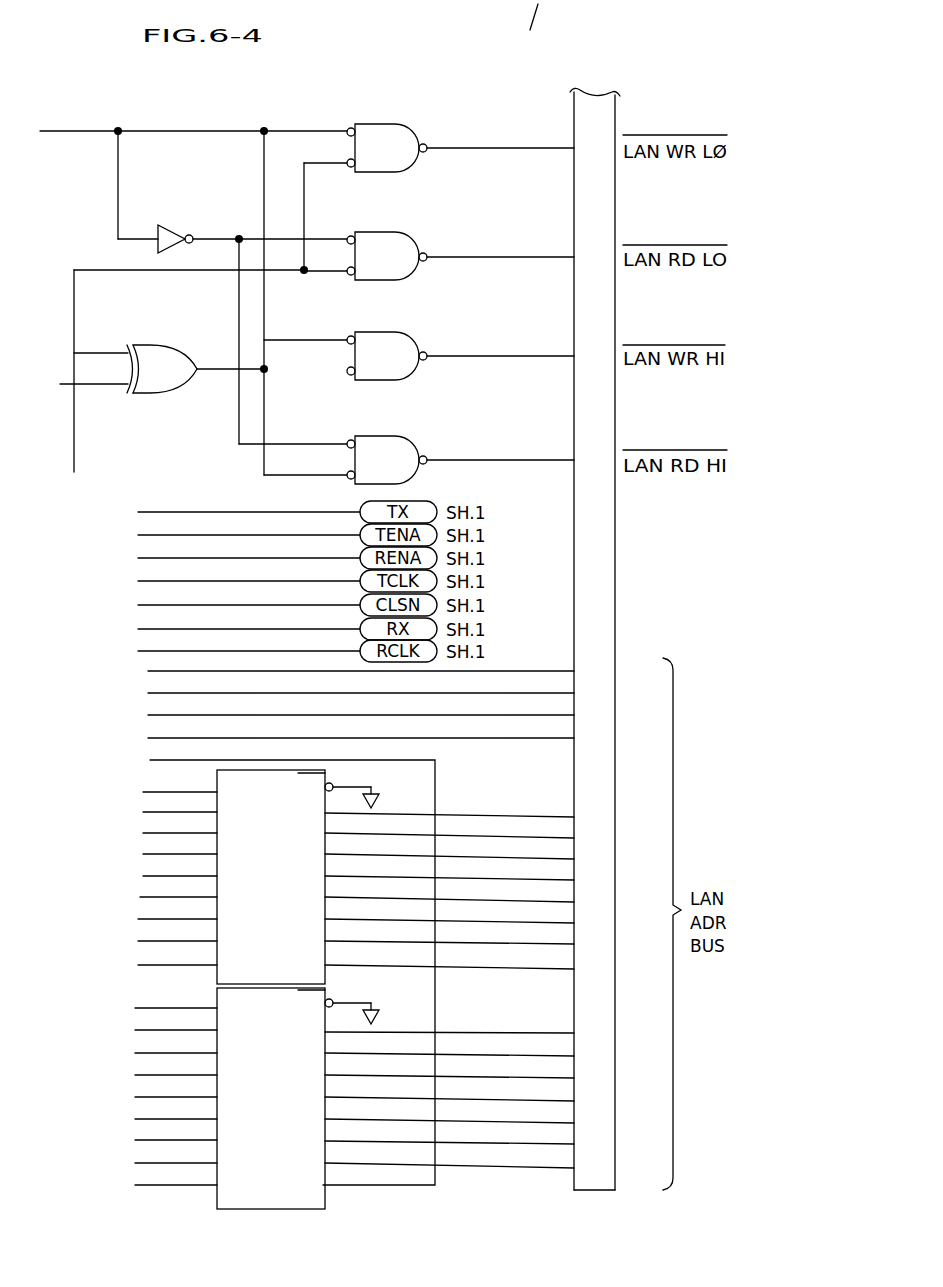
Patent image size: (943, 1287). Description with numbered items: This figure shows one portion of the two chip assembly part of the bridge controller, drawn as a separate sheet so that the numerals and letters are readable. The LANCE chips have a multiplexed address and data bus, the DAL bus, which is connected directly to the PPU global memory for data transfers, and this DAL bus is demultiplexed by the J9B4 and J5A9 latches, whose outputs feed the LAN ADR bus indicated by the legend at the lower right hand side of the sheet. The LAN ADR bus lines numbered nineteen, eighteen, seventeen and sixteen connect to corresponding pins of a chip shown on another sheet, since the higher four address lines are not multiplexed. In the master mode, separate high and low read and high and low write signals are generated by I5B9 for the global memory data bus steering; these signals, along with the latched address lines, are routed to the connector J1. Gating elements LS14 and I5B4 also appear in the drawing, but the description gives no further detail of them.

The inverter LS14 is at (246, 225).
The exclusive-OR gate LS86 I5B4 is at (188, 386).
The element I5B9 is at (448, 285).
The connector J1 (P/O) J1 is at (613, 623).
The J9B4 latch J9B4 is at (356, 875).
The J5A9 latch J5A9 is at (354, 1095).